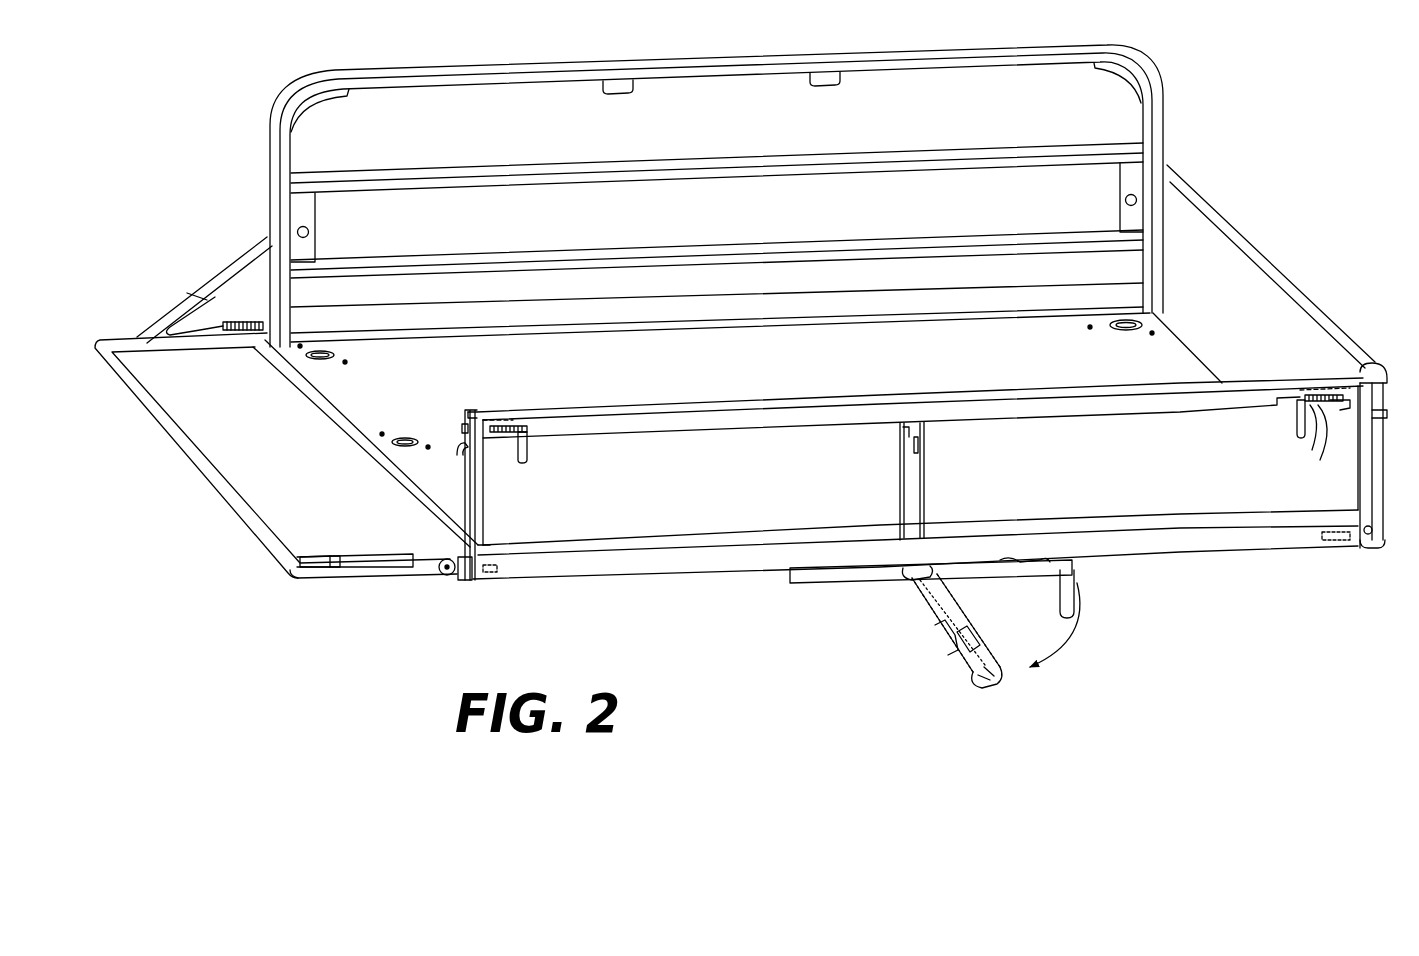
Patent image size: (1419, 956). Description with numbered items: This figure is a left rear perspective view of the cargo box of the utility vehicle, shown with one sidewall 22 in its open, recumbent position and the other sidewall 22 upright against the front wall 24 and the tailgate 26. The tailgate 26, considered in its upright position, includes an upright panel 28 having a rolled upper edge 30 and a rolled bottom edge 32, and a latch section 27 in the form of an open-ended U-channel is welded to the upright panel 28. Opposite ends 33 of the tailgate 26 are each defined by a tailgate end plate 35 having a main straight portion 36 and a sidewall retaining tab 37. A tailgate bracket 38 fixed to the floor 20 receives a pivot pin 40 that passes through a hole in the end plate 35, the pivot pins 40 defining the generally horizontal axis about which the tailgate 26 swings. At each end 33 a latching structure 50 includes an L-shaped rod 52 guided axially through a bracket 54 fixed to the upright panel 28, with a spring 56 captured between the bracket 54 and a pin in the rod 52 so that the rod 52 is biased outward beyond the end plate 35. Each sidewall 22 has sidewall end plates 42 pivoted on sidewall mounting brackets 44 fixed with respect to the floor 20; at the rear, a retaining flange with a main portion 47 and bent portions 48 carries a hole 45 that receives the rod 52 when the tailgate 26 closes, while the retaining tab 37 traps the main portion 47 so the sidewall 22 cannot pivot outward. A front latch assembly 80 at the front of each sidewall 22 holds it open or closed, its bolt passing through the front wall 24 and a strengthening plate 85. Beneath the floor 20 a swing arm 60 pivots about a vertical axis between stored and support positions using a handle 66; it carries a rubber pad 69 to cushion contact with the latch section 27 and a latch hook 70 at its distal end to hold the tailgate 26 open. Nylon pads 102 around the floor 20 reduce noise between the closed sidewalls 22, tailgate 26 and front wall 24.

The floor 20 is at (727, 373).
The sidewall 22 is at (217, 452).
The front wall 24 is at (652, 134).
The tailgate 26 is at (867, 388).
The latch section 27 is at (900, 482).
The upright panel 28 is at (702, 491).
The rolled upper edge 30 is at (1168, 390).
The rolled bottom edge 32 is at (1200, 550).
The opposite ends 33 is at (480, 476).
The tailgate end plate 35 is at (472, 499).
The main straight portion 36 is at (478, 545).
The sidewall retaining tab 37 is at (462, 453).
The tailgate bracket 38 is at (457, 580).
The pivot pin 40 is at (490, 570).
The sidewall end plate 42 is at (122, 336).
The sidewall mounting bracket 44 is at (1373, 548).
The hole 45 is at (313, 556).
The main portion 47 is at (340, 568).
The bent portions 48 is at (305, 580).
The latching structure 50 is at (1338, 426).
The L-shaped rod 52 is at (463, 428).
The bracket 54 is at (1311, 447).
The spring 56 is at (1328, 452).
The swing arm 60 is at (895, 643).
The handle 66 is at (1027, 574).
The rubber pad 69 is at (918, 583).
The latch hook 70 is at (987, 685).
The front latch assembly 80 is at (206, 266).
The strengthening plate 85 is at (314, 210).
The nylon pads 102 is at (464, 423).